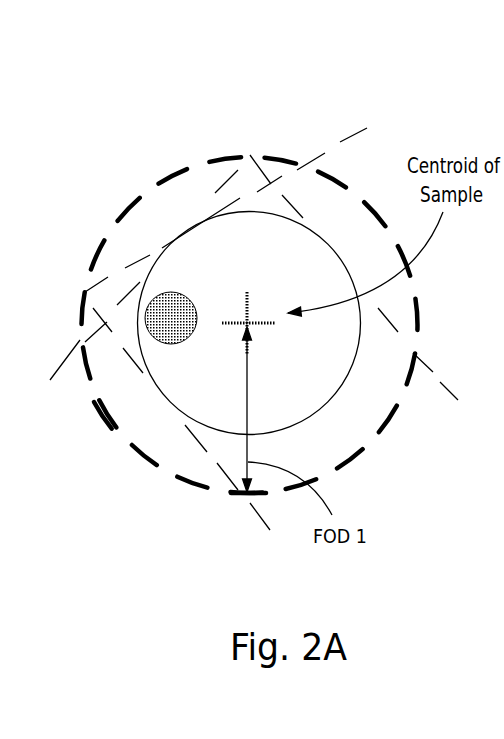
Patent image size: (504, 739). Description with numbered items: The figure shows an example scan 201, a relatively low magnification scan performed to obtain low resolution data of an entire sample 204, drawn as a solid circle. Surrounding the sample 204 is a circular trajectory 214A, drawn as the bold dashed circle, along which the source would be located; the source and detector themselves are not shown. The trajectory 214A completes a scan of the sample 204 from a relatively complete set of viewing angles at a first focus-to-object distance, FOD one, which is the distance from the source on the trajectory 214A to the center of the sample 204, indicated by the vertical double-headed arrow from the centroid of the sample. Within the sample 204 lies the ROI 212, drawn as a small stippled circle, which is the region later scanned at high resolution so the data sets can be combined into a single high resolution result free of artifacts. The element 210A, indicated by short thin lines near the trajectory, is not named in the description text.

The scan 201 is at (142, 138).
The region boundary lines 210A is at (340, 146).
The sample 204 is at (325, 408).
The ROI 212 is at (157, 287).
The circular trajectory 214A is at (107, 420).